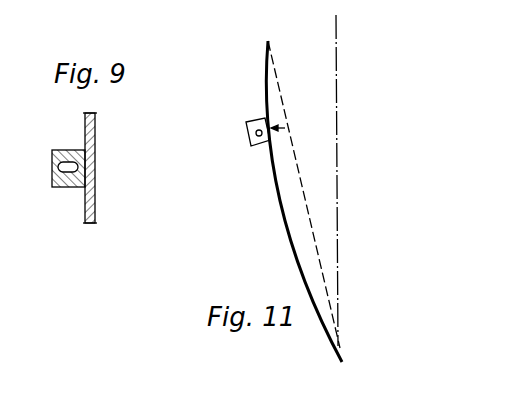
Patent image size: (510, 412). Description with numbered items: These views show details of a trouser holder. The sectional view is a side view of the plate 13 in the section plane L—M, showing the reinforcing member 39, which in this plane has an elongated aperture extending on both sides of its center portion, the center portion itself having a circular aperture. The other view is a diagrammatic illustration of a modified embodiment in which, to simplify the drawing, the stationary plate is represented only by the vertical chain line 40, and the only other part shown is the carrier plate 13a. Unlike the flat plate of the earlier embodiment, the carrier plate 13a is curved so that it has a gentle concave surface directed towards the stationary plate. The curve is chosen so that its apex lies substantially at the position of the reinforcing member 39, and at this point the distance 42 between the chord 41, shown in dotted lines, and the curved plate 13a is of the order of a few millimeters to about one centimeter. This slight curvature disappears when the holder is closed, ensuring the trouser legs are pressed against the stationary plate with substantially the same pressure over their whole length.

In FIG. 9, the plate 13 is at (95, 206).
In FIG. 11, the carrier plate 13a is at (292, 234).
In FIG. 9, the reinforcing member 39 is at (62, 184).
In FIG. 11, the reinforcing member 39 is at (253, 137).
In FIG. 11, the vertical chain line 40 is at (338, 103).
In FIG. 11, the chord 41 is at (300, 172).
In FIG. 11, the distance 42 is at (277, 131).